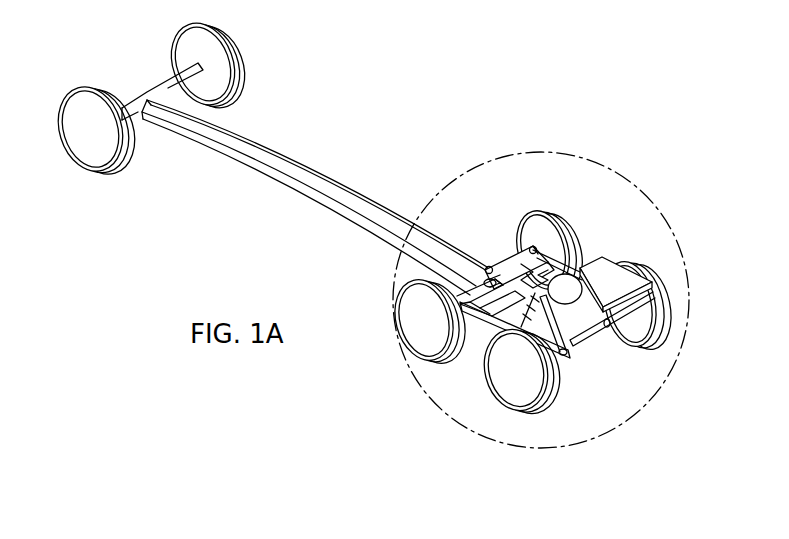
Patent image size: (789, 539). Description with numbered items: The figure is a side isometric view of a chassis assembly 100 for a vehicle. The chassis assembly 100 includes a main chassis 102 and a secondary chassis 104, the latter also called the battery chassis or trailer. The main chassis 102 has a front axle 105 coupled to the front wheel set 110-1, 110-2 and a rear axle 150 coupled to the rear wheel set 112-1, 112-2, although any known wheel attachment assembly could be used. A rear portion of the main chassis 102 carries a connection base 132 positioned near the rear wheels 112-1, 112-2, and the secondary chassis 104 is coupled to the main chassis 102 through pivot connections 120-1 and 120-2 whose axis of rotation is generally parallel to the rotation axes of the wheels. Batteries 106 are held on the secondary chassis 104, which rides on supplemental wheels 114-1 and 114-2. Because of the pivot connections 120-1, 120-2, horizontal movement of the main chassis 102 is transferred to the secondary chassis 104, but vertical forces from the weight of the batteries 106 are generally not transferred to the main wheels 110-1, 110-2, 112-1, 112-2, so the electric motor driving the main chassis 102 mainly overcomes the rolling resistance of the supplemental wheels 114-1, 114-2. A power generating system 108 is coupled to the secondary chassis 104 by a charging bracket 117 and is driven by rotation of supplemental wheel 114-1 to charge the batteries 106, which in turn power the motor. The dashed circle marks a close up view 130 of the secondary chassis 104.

The chassis assembly 100 is at (479, 130).
The main chassis 102 is at (268, 178).
The secondary chassis 104 is at (572, 358).
The front axle 105 is at (150, 87).
The batteries 106 is at (613, 275).
The power generating system 108 is at (503, 262).
The front wheel 110-1 is at (90, 138).
The front wheel 110-2 is at (230, 63).
The rear wheel 112-1 is at (420, 332).
The rear wheel 112-2 is at (560, 229).
The supplemental wheel 114-1 is at (522, 382).
The supplemental wheel 114-2 is at (672, 333).
The charging bracket 117 is at (568, 352).
The first forward pivot connection 120-1 is at (487, 270).
The second forward pivot connection 120-2 is at (533, 247).
The close up view 130 is at (623, 430).
The connection base 132 is at (485, 262).
The rear axle 150 is at (485, 352).